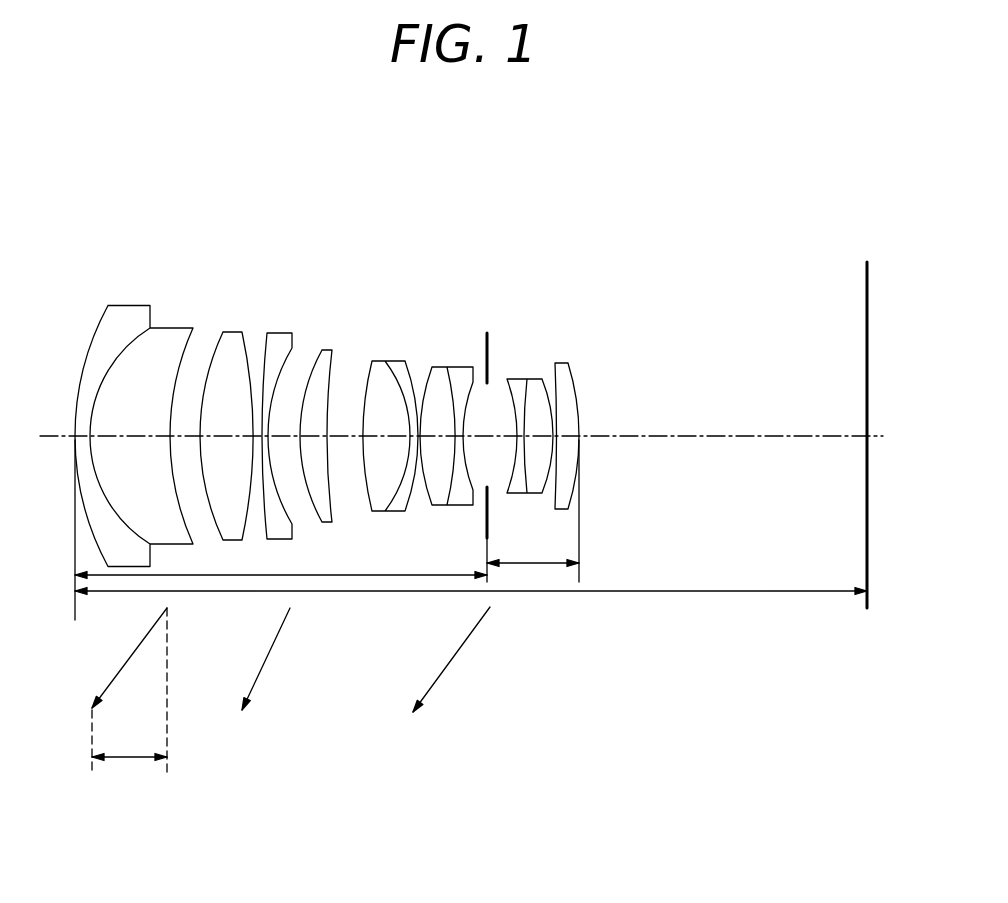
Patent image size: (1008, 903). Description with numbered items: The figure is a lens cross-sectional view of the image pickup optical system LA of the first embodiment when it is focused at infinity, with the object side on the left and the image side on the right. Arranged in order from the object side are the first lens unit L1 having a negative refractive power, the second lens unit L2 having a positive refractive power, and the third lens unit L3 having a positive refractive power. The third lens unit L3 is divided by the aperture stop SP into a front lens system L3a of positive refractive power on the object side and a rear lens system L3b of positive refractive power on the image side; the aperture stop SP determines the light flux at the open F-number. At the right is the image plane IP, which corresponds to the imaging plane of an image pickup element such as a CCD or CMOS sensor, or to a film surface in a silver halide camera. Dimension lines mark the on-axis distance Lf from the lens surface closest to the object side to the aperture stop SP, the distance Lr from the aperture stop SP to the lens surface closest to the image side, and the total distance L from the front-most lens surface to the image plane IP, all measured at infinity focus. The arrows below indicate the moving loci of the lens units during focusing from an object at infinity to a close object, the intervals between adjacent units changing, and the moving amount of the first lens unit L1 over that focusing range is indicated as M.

The image pickup optical system LA is at (583, 153).
The first lens unit L1 is at (65, 290).
The second lens unit L2 is at (255, 290).
The third lens unit L3 is at (360, 230).
The 3a-th lens system L3a is at (360, 290).
The 3b-th lens system L3b is at (502, 290).
The aperture stop SP is at (486, 345).
The image plane IP is at (865, 283).
The distance from the lens surface closest to the object side to the aperture stop Lf is at (281, 560).
The distance from the aperture stop to the lens surface closest to the image side Lr is at (533, 549).
The distance from the lens surface closest to the object side to the image plane L is at (471, 577).
The moving amount of the first lens unit during focusing M is at (129, 690).